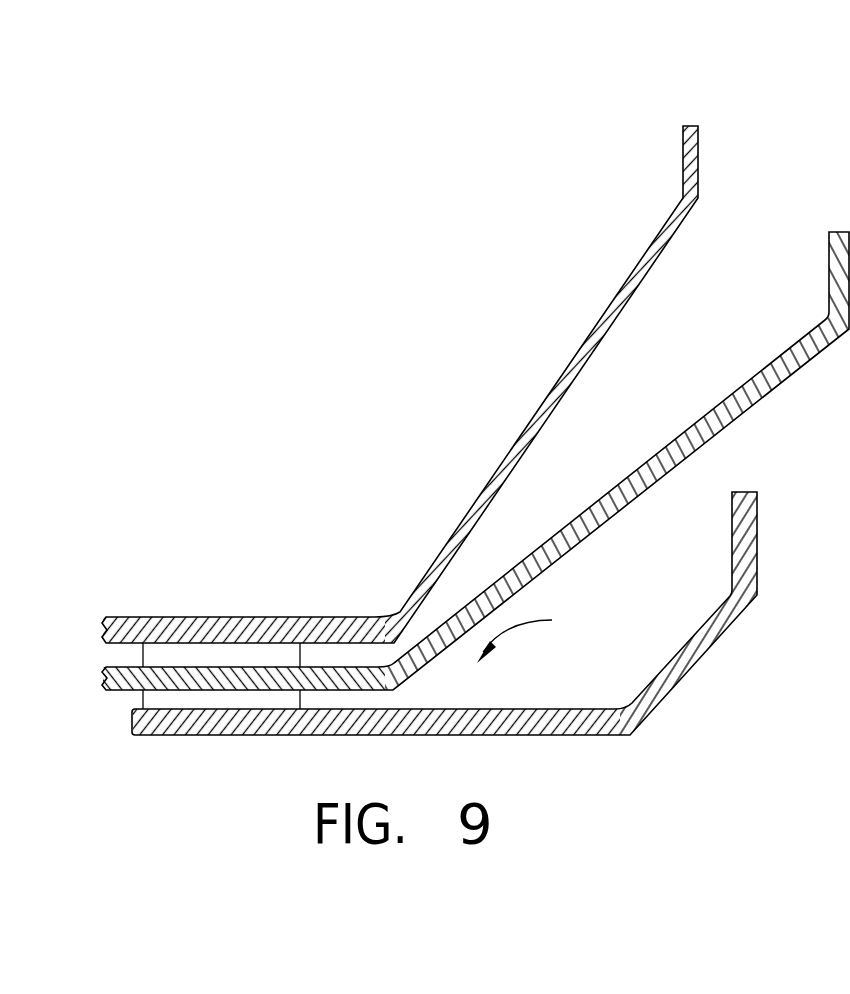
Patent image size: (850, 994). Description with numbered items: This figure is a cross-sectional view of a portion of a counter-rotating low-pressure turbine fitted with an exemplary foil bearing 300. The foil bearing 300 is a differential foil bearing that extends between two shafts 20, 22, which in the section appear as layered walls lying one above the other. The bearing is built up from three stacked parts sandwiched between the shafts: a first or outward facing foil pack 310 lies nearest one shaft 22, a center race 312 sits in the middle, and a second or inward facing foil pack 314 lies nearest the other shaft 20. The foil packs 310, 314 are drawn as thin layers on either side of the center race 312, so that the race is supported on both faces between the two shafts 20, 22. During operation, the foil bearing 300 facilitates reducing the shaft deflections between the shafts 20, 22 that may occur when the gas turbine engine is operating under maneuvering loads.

The shaft 20 is at (677, 685).
The shaft 22 is at (240, 655).
The foil bearing 300 is at (542, 634).
The outward facing foil pack 310 is at (262, 617).
The center race 312 is at (598, 530).
The inward facing foil pack 314 is at (214, 700).